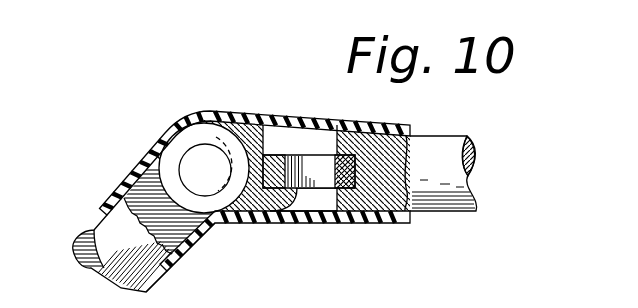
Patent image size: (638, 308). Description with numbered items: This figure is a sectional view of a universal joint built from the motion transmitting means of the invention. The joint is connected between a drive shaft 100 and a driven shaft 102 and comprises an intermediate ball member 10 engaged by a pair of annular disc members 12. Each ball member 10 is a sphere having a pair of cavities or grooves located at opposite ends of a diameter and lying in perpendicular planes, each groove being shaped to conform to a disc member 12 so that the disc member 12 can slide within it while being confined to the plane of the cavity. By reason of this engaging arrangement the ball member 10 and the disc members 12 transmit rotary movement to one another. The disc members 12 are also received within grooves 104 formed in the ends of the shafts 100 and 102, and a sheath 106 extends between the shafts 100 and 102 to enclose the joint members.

The ball member 10 is at (265, 136).
The disc member 12 is at (188, 137).
The drive shaft 100 is at (427, 143).
The driven shaft 102 is at (92, 228).
The groove 104 is at (333, 164).
The sheath 106 is at (293, 118).